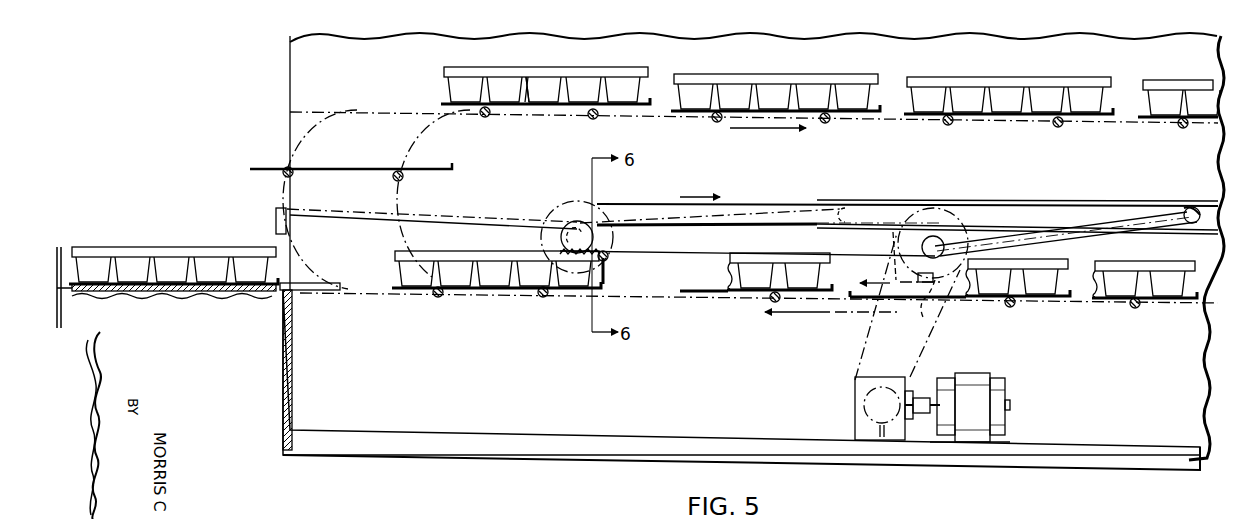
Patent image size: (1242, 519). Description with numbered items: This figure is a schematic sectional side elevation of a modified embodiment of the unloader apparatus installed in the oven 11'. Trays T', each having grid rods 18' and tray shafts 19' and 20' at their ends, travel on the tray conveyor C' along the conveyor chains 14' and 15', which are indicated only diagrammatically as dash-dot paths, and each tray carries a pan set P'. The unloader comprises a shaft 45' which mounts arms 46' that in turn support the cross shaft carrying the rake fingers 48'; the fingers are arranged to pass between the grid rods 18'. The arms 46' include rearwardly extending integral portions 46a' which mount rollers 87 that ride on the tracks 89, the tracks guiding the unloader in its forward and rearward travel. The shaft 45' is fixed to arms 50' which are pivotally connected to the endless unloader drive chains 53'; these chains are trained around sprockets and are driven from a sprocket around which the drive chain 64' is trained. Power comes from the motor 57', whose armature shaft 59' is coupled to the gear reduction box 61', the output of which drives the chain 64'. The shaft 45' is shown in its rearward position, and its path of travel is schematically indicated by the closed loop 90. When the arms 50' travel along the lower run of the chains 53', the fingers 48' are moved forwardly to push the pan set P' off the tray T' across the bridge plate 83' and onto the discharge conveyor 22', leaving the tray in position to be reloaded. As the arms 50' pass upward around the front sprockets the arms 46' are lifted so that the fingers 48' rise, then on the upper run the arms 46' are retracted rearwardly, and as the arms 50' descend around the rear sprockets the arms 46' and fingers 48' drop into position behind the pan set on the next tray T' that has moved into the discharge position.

The conveyor chain 14' is at (326, 175).
The conveyor chain 15' is at (428, 169).
The pan set P' is at (421, 137).
The tray shaft 19' is at (481, 131).
The grid rod 18' is at (526, 116).
The tray shaft 20' is at (577, 132).
The unloader apparatus drive chain 53' is at (752, 184).
The path of travel 90 is at (577, 221).
The arm 46' is at (747, 223).
The shaft 45' is at (933, 224).
The rearwardly extending integral portion 46a' is at (1066, 212).
The tray conveyor C' is at (1160, 123).
The track 89 is at (1080, 225).
The roller 87 is at (1206, 205).
The discharge conveyor 22' is at (167, 293).
The bridge plate 83' is at (314, 312).
The tray T' is at (496, 296).
The rake finger 48' is at (637, 287).
The arm 50' is at (917, 303).
The drive chain 64' is at (922, 306).
The armature shaft 59' is at (947, 376).
The motor 57' is at (978, 387).
The gear reduction box 61' is at (853, 408).
The oven 11' is at (741, 397).